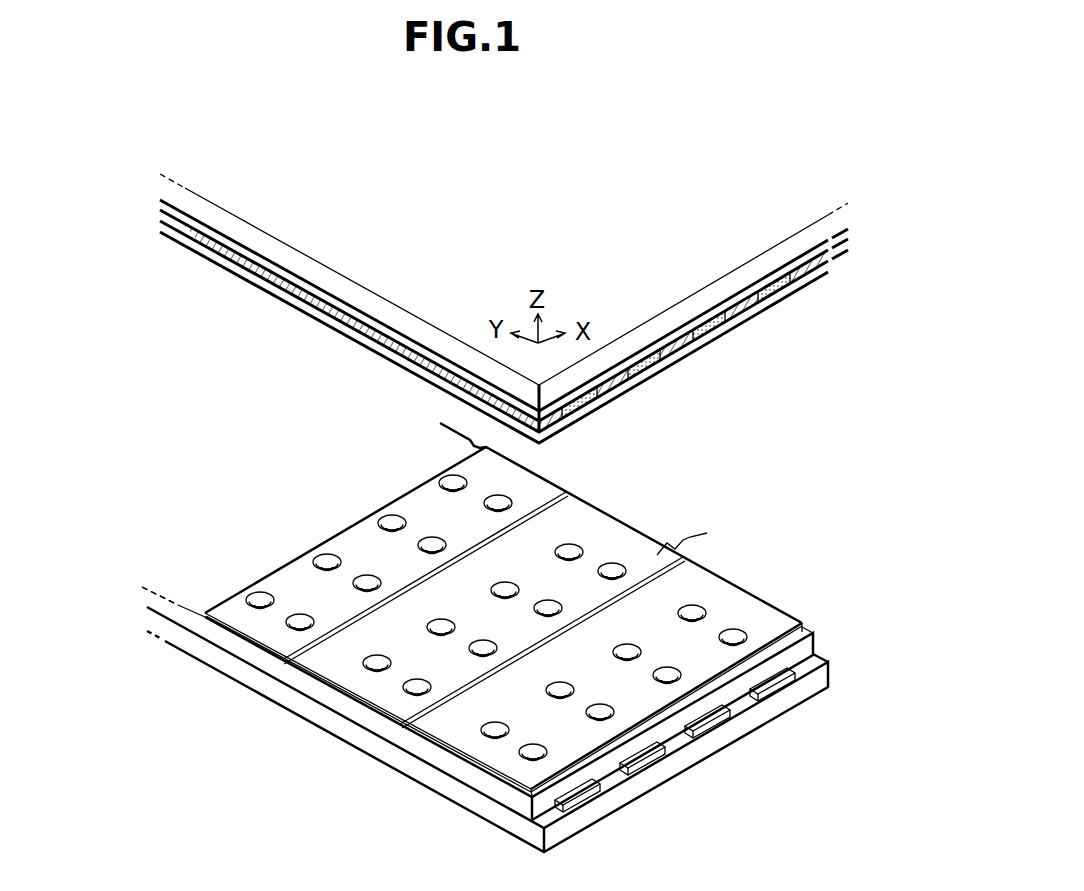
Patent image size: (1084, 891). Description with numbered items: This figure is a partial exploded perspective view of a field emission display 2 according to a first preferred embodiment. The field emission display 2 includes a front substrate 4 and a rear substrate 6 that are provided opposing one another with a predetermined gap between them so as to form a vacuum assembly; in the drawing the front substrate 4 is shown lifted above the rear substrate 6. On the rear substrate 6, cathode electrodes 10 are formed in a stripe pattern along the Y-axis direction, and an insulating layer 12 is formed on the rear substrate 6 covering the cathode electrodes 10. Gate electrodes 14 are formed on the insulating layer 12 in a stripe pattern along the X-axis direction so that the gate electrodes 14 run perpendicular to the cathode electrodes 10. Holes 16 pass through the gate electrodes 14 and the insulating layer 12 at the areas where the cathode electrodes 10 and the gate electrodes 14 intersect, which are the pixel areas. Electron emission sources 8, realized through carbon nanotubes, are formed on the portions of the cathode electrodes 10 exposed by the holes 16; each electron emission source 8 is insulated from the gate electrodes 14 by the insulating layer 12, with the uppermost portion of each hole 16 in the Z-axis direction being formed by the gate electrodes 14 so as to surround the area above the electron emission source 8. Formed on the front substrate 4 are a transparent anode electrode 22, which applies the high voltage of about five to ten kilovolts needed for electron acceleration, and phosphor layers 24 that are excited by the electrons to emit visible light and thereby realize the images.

The field emission display 2 is at (703, 471).
The front substrate 4 is at (583, 377).
The rear substrate 6 is at (447, 795).
The electron emission sources 8 is at (297, 628).
The cathode electrodes 10 is at (690, 746).
The insulating layer 12 is at (312, 668).
The gate electrodes 14 is at (725, 593).
The holes 16 is at (205, 613).
The transparent anode electrode 22 is at (445, 366).
The phosphor layers 24 is at (713, 330).